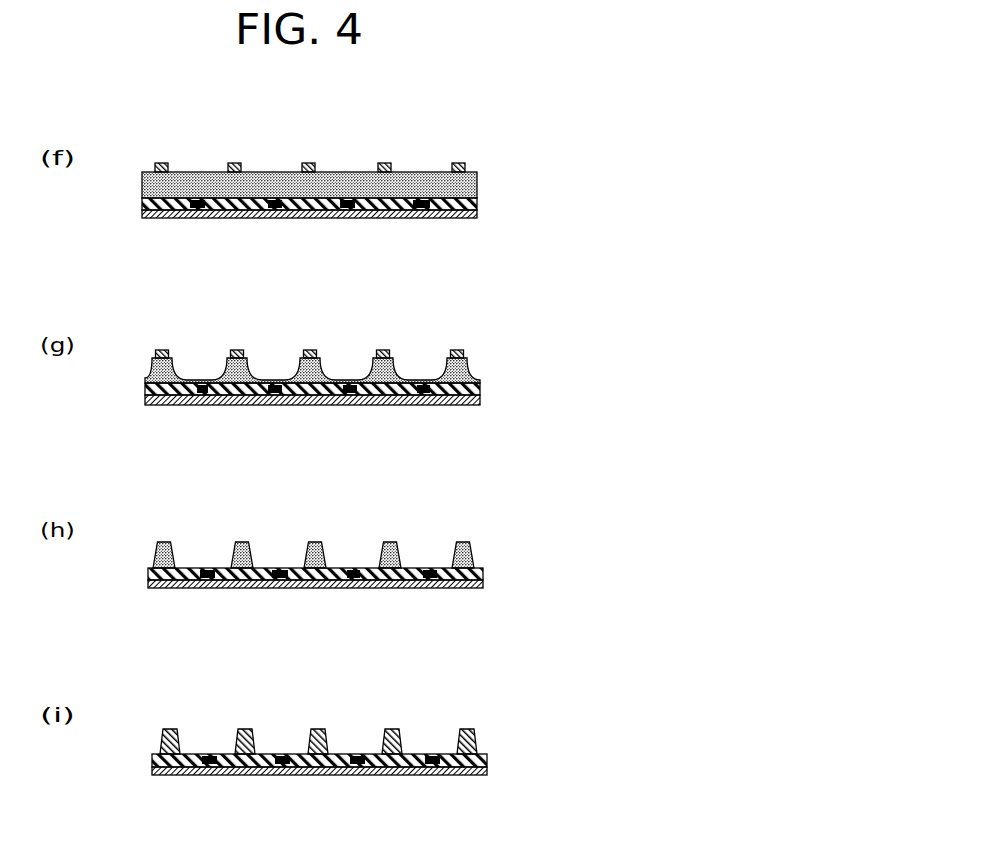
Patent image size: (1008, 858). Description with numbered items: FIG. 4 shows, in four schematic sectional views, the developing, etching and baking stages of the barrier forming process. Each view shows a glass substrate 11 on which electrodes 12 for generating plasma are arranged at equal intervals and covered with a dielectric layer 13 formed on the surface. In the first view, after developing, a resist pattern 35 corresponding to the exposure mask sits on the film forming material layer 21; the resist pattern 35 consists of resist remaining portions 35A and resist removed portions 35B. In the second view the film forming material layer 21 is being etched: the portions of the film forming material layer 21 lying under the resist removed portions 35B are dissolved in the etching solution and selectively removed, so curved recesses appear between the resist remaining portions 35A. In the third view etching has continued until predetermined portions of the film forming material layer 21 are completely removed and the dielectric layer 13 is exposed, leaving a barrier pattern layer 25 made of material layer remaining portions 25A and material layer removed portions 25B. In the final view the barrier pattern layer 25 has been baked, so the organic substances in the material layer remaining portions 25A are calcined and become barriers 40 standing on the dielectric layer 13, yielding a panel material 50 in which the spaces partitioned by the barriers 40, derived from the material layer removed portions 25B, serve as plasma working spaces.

The glass substrate 11 is at (297, 216).
The electrodes 12 is at (190, 207).
The dielectric layer 13 is at (477, 197).
The film forming material layer 21 is at (448, 218).
The barrier pattern layer 25 is at (420, 561).
The material layer remaining portions 25A is at (165, 540).
The material layer removed portions 25B is at (475, 617).
The resist pattern 35 is at (463, 151).
The resist remaining portions 35A is at (308, 348).
The resist removed portions 35B is at (195, 168).
The barriers 40 is at (237, 728).
The panel material 50 is at (432, 702).